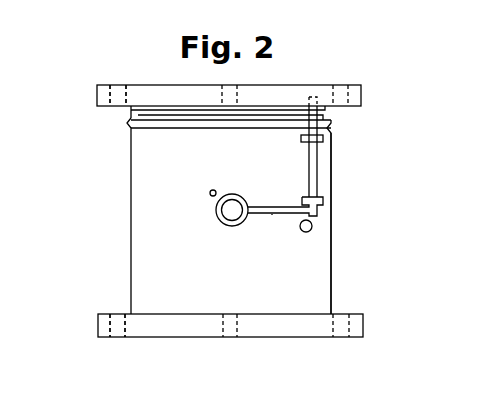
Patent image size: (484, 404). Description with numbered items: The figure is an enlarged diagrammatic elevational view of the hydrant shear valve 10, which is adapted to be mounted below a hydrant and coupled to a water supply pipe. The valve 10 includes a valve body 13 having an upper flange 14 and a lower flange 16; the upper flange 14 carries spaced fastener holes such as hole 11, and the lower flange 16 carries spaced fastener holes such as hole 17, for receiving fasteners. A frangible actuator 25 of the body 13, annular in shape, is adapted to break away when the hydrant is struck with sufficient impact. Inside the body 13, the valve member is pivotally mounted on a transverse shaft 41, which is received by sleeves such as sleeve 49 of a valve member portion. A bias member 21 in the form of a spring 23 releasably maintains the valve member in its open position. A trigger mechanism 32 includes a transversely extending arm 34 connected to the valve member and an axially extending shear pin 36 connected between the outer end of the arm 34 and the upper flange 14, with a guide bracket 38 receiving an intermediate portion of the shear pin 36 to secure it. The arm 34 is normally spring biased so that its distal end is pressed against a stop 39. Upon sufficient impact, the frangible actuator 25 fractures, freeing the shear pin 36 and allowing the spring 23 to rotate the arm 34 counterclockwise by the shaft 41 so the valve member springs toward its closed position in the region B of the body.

The hydrant shear valve 10 is at (110, 250).
The fastener hole 11 is at (120, 87).
The valve body 13 is at (147, 164).
The upper flange 14 is at (363, 97).
The lower flange 16 is at (97, 325).
The fastener hole 17 is at (118, 338).
The bias member 21 is at (210, 229).
The spring 23 is at (210, 193).
The frangible actuator 25 is at (119, 120).
The trigger mechanism 32 is at (289, 237).
The arm 34 is at (272, 215).
The shear pin 36 is at (313, 172).
The guide bracket 38 is at (324, 139).
The stop 39 is at (312, 230).
The shaft 41 is at (229, 213).
The sleeve 49 is at (236, 227).
The interior region B is at (338, 152).